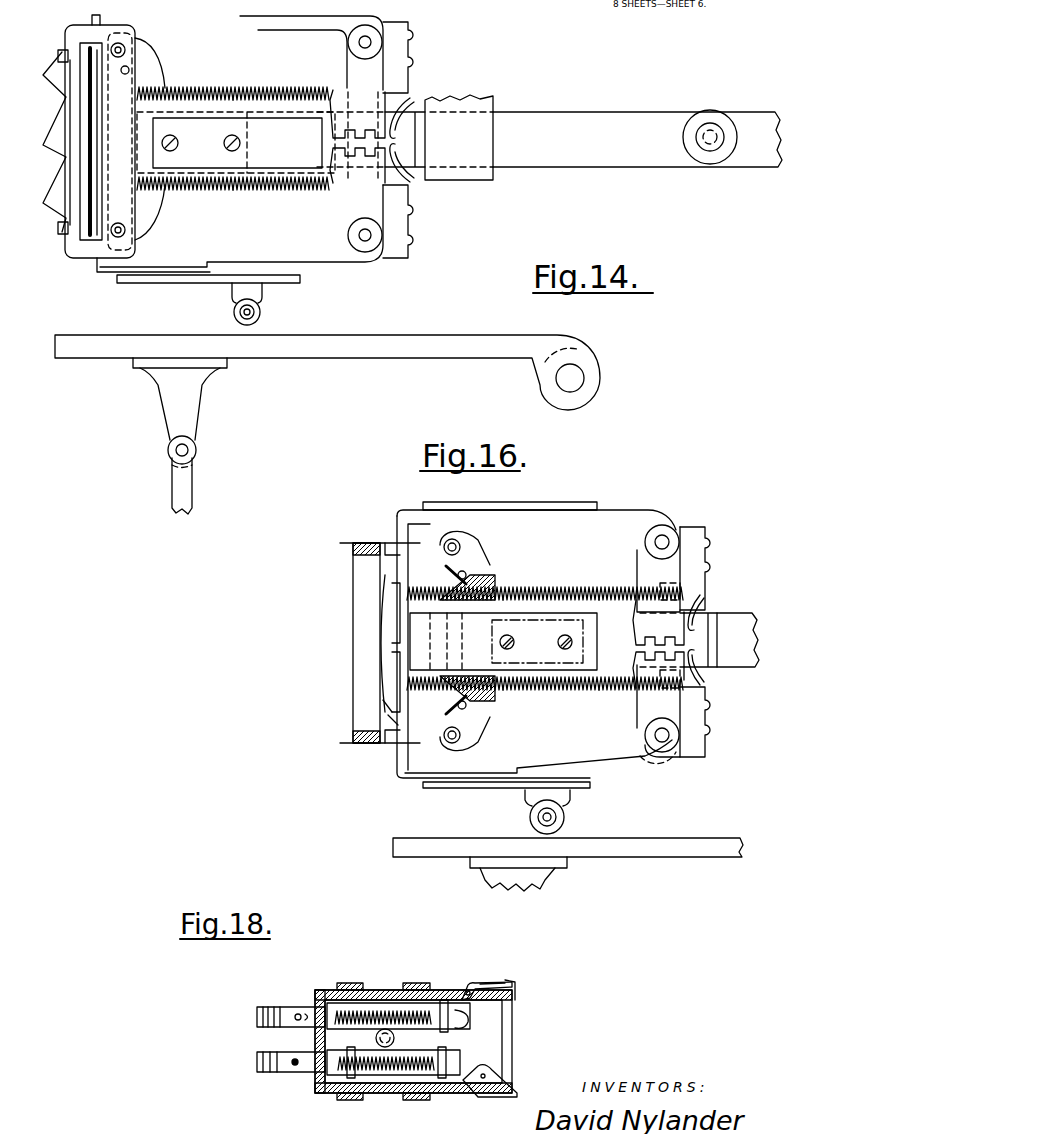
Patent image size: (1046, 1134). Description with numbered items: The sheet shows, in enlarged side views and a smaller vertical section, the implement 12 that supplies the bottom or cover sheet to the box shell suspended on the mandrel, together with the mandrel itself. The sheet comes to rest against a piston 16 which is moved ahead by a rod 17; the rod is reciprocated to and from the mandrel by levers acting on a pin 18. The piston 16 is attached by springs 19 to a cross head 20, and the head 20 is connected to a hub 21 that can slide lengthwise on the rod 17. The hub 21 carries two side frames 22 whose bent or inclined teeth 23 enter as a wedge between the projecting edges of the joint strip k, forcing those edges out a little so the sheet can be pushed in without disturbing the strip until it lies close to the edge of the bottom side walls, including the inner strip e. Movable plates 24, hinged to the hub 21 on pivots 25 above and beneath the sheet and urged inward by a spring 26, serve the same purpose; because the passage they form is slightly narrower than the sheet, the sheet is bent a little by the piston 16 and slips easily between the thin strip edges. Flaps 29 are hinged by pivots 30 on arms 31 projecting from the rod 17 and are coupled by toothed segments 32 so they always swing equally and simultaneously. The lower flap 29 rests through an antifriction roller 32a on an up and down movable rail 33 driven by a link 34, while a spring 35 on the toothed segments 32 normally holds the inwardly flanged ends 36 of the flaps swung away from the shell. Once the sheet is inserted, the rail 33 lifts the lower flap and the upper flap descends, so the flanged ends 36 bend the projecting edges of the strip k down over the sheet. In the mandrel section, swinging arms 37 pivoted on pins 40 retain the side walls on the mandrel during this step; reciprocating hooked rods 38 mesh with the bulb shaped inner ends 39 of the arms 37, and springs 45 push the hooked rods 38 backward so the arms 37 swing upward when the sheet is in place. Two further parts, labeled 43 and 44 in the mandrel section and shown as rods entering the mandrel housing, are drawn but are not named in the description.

In FIG. 14, the implement 12 is at (330, 247).
In FIG. 16, the implement 12 is at (610, 540).
In FIG. 14, the piston 16 is at (75, 182).
In FIG. 16, the piston 16 is at (398, 625).
In FIG. 14, the rod 17 is at (574, 125).
In FIG. 16, the rod 17 is at (728, 622).
In FIG. 14, the pin 18 is at (713, 128).
In FIG. 14, the springs 19 is at (280, 190).
In FIG. 16, the springs 19 is at (615, 688).
In FIG. 14, the cross head 20 is at (338, 88).
In FIG. 16, the cross head 20 is at (690, 608).
In FIG. 14, the hub 21 is at (207, 192).
In FIG. 16, the hub 21 is at (493, 598).
In FIG. 14, the side frames 22 is at (100, 182).
In FIG. 16, the side frames 22 is at (395, 720).
In FIG. 14, the teeth 23 is at (100, 135).
In FIG. 16, the teeth 23 is at (385, 710).
In FIG. 14, the movable plates 24 is at (62, 54).
In FIG. 16, the movable plates 24 is at (392, 545).
In FIG. 14, the pivots 25 is at (128, 47).
In FIG. 16, the pivots 25 is at (462, 548).
In FIG. 14, the spring 26 is at (120, 72).
In FIG. 14, the flaps 29 is at (152, 283).
In FIG. 16, the flaps 29 is at (425, 505).
In FIG. 14, the pivots 30 is at (372, 44).
In FIG. 16, the pivots 30 is at (670, 545).
In FIG. 14, the arms 31 is at (395, 28).
In FIG. 16, the arms 31 is at (700, 555).
In FIG. 14, the toothed segments 32 is at (395, 150).
In FIG. 16, the toothed segments 32 is at (695, 668).
In FIG. 14, the antifriction roller 32a is at (262, 312).
In FIG. 16, the antifriction roller 32a is at (530, 822).
In FIG. 14, the rail 33 is at (395, 352).
In FIG. 16, the rail 33 is at (407, 852).
In FIG. 14, the link 34 is at (183, 488).
In FIG. 16, the link 34 is at (492, 880).
In FIG. 14, the spring 35 is at (398, 115).
In FIG. 16, the spring 35 is at (695, 623).
In FIG. 14, the inwardly flanged ends 36 is at (96, 266).
In FIG. 16, the inwardly flanged ends 36 is at (405, 778).
In FIG. 18, the swinging arms 37 is at (514, 985).
In FIG. 18, the hooked rods 38 is at (470, 1020).
In FIG. 18, the bulb shaped inner ends 39 is at (465, 988).
In FIG. 18, the pins 40 is at (492, 979).
In FIG. 18, the plunger 43 is at (290, 1009).
In FIG. 18, the plunger 44 is at (292, 1070).
In FIG. 18, the springs 45 is at (383, 998).
In FIG. 16, the joint strip k is at (348, 540).
In FIG. 16, the side wall strip e is at (362, 557).